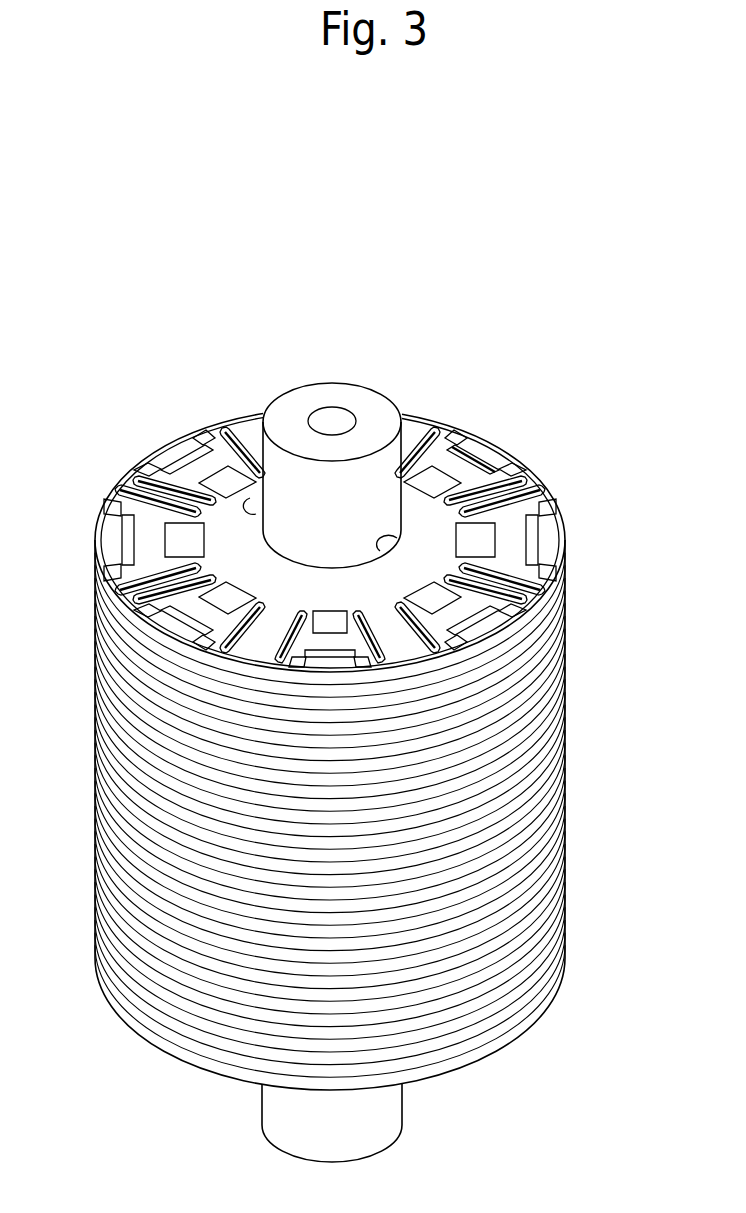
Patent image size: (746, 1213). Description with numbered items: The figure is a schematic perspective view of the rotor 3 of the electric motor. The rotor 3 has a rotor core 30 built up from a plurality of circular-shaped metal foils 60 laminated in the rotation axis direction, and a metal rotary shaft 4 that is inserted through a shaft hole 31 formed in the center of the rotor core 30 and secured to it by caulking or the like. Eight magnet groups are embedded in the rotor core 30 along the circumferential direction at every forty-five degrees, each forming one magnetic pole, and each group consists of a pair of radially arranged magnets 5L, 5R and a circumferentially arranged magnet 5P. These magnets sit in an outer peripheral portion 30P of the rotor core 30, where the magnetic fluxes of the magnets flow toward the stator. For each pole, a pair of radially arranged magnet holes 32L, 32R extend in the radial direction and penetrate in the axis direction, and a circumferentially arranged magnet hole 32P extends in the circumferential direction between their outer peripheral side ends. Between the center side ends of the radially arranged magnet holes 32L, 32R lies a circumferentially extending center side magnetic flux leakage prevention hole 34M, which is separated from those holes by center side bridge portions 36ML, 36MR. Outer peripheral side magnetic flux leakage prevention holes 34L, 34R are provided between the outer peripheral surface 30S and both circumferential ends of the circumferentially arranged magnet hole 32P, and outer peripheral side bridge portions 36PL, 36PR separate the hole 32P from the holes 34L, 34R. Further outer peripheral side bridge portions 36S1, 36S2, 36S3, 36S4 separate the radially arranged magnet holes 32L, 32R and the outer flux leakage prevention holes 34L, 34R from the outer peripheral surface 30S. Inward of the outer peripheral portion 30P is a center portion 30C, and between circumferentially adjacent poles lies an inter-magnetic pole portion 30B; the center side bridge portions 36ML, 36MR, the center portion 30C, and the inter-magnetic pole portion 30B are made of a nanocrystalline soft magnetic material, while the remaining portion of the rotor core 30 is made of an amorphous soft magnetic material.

The rotor 3 is at (645, 268).
The rotary shaft 4 is at (345, 388).
The radially arranged magnet 5L is at (430, 428).
The circumferentially arranged magnet 5P is at (470, 452).
The radially arranged magnet 5R is at (495, 489).
The rotor core 30 is at (343, 716).
The outer peripheral surface 30S is at (568, 745).
The inter-magnetic pole portion 30B is at (108, 506).
The center portion 30C is at (238, 547).
The outer peripheral portion 30P is at (140, 550).
The shaft hole 31 is at (394, 544).
The radially arranged magnet hole 32L is at (420, 442).
The circumferentially arranged magnet hole 32P is at (482, 464).
The radially arranged magnet hole 32R is at (515, 483).
The outer peripheral side magnetic flux leakage prevention hole 34L is at (553, 500).
The center side magnetic flux leakage prevention hole 34M is at (540, 532).
The outer peripheral side magnetic flux leakage prevention hole 34R is at (553, 560).
The outer peripheral side bridge portion 36S1 is at (122, 470).
The outer peripheral side bridge portion 36S2 is at (163, 452).
The outer peripheral side bridge portion 36S3 is at (195, 426).
The outer peripheral side bridge portion 36S4 is at (236, 418).
The center side bridge portion 36MR is at (128, 592).
The outer peripheral side bridge portion 36PR is at (145, 612).
The outer peripheral side bridge portion 36PL is at (195, 640).
The center side bridge portion 36ML is at (224, 648).
The metal foil 60 is at (568, 772).